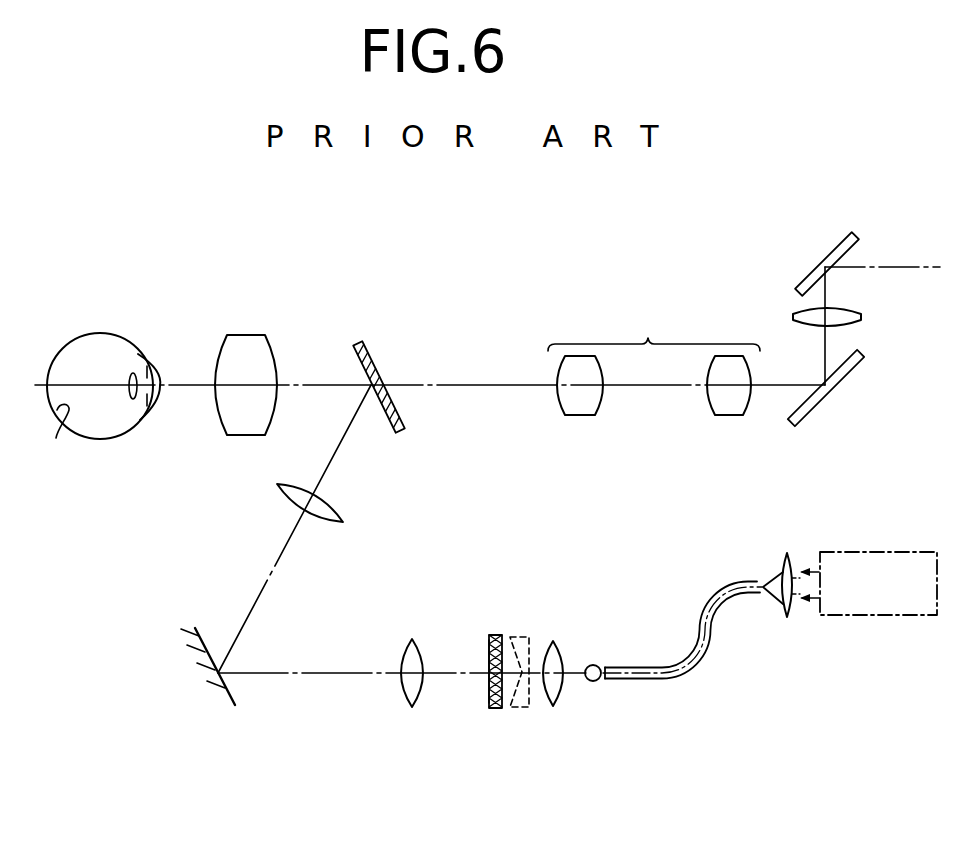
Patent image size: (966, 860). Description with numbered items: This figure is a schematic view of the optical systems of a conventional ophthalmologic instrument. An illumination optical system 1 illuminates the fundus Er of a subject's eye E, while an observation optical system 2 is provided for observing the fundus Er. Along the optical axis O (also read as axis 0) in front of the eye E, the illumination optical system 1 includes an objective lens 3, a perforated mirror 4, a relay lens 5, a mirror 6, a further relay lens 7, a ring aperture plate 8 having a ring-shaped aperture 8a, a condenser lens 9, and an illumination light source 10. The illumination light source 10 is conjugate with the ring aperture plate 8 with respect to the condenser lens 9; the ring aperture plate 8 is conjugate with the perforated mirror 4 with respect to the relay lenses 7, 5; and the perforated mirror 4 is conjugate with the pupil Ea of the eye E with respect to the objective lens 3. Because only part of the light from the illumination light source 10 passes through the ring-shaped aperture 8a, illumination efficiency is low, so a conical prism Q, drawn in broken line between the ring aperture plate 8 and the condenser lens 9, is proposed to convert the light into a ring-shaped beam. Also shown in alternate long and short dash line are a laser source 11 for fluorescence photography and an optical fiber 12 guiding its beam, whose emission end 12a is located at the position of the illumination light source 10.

The subject's eye E is at (113, 334).
The fundus Er is at (56, 438).
The pupil Ea is at (137, 418).
The objective lens 3 is at (250, 336).
The optical axis O is at (487, 470).
The optical axis 0 is at (493, 383).
The perforated mirror 4 is at (401, 419).
The relay lens 5 is at (345, 517).
The mirror 6 is at (205, 665).
The relay lens 7 is at (402, 696).
The ring aperture plate 8 is at (495, 710).
The ring-shaped aperture 8a is at (489, 655).
The conical prism Q is at (524, 636).
The condenser lens 9 is at (558, 641).
The illumination light source 10 is at (597, 665).
The laser source 11 is at (888, 615).
The optical fiber 12 is at (708, 612).
The emission end 12a is at (620, 677).
The observation optical system 2 is at (648, 416).
The illumination optical system 1 is at (562, 760).